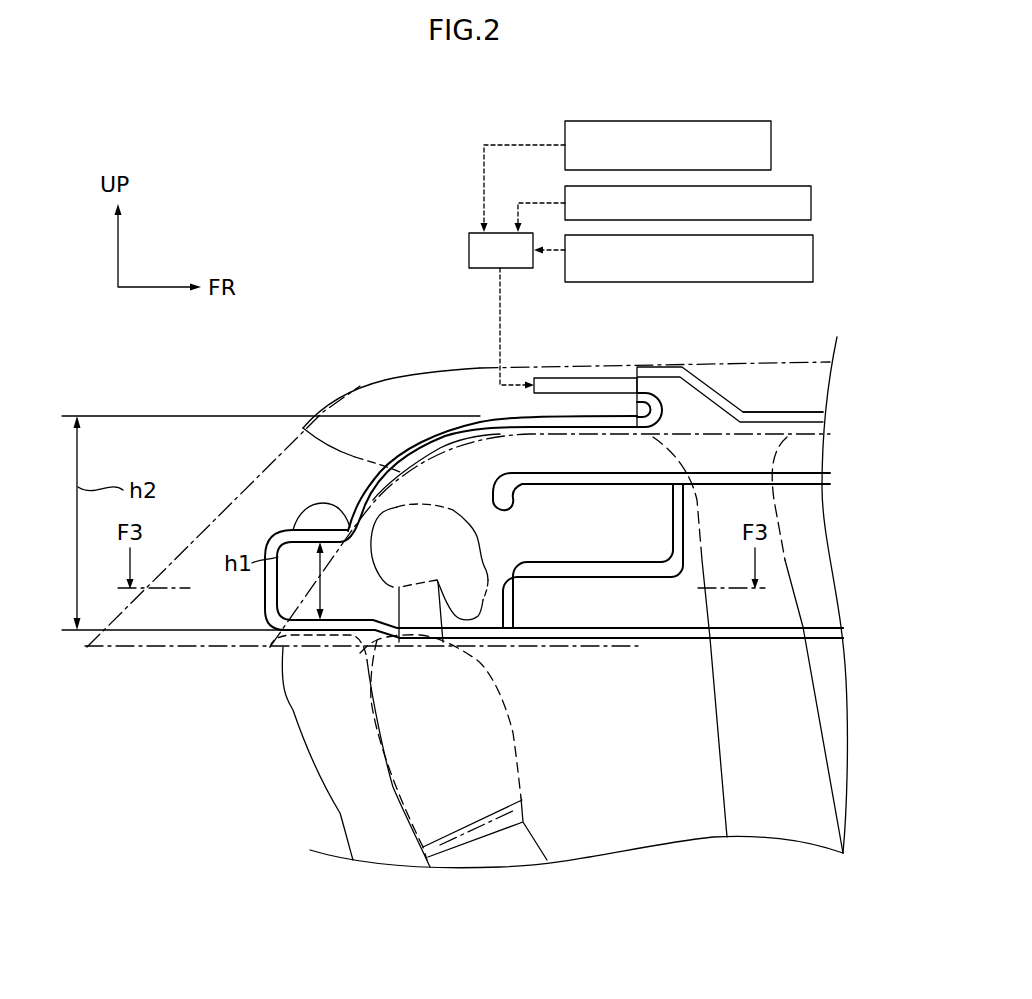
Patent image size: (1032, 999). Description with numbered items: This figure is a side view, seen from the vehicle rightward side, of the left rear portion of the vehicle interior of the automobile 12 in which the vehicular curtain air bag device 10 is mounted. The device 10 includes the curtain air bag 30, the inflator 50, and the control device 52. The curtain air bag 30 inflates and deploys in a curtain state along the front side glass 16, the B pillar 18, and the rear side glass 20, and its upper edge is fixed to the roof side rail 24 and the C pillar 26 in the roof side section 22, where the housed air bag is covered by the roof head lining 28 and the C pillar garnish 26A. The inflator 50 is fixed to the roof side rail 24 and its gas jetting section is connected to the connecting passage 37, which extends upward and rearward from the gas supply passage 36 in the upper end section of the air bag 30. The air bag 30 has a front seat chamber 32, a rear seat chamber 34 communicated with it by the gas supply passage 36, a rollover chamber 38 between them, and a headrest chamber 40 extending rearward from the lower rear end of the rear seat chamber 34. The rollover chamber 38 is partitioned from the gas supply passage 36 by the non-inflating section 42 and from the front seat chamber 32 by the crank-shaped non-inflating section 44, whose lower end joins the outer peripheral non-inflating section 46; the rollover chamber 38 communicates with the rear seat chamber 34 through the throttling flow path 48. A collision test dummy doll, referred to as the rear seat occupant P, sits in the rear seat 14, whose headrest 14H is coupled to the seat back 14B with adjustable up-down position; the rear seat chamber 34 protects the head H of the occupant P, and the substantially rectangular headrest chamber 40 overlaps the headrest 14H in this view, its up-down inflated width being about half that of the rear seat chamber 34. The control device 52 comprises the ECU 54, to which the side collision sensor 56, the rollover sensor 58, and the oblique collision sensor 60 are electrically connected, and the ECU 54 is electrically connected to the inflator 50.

The vehicular curtain air bag device 10 is at (600, 95).
The automobile 12 is at (364, 385).
The rear seat 14 is at (282, 697).
The seat back 14B is at (313, 765).
The headrest 14H is at (326, 505).
The front side glass 16 is at (805, 532).
The B pillar 18 is at (710, 737).
The rear side glass 20 is at (487, 455).
The roof side section 22 is at (800, 352).
The roof side rail 24 is at (725, 360).
The C pillar 26 is at (223, 516).
The C pillar garnish 26A is at (247, 517).
The roof head lining 28 is at (770, 382).
The curtain air bag 30 is at (670, 649).
The front seat chamber 32 is at (805, 583).
The rear seat chamber 34 is at (450, 477).
The gas supply passage 36 is at (720, 450).
The connecting passage 37 is at (667, 393).
The rollover chamber 38 is at (600, 540).
The headrest chamber 40 is at (282, 586).
The non-inflating section 42 is at (574, 476).
The crank-shaped non-inflating section 44 is at (630, 578).
The outer peripheral non-inflating section 46 is at (757, 633).
The throttling flow path 48 is at (533, 576).
The inflator 50 is at (572, 378).
The control device 52 is at (456, 146).
The ECU 54 is at (469, 247).
The side collision sensor 56 is at (772, 148).
The rollover sensor 58 is at (812, 203).
The oblique collision sensor 60 is at (814, 248).
The head H is at (480, 531).
The neck of occupant N is at (427, 640).
The rear seat occupant P is at (522, 763).